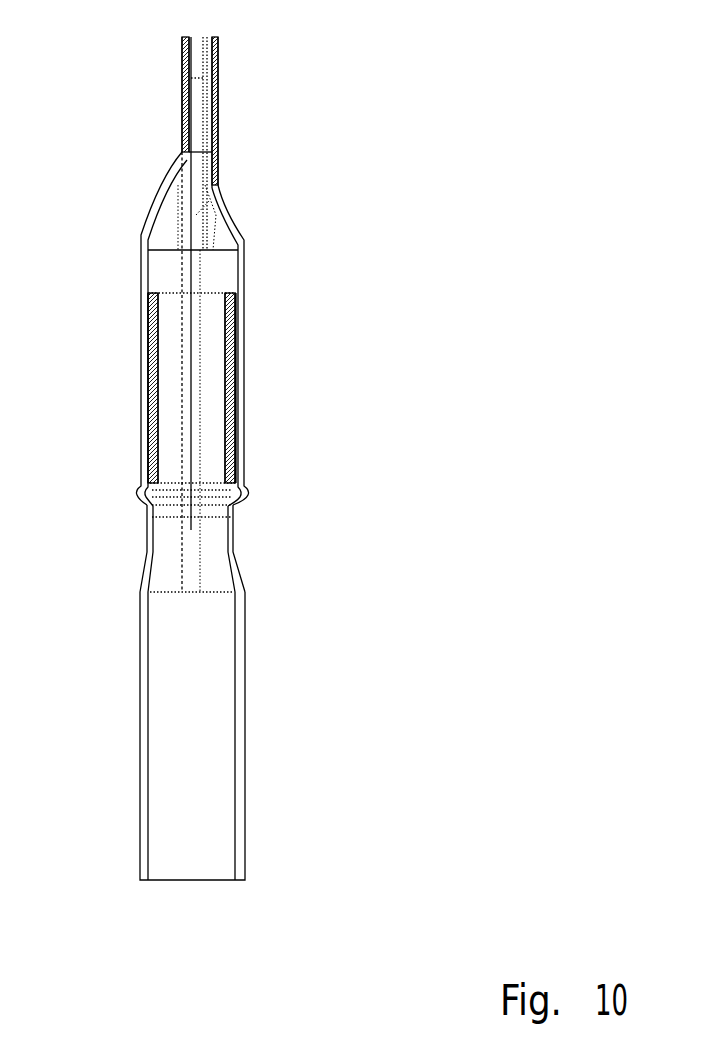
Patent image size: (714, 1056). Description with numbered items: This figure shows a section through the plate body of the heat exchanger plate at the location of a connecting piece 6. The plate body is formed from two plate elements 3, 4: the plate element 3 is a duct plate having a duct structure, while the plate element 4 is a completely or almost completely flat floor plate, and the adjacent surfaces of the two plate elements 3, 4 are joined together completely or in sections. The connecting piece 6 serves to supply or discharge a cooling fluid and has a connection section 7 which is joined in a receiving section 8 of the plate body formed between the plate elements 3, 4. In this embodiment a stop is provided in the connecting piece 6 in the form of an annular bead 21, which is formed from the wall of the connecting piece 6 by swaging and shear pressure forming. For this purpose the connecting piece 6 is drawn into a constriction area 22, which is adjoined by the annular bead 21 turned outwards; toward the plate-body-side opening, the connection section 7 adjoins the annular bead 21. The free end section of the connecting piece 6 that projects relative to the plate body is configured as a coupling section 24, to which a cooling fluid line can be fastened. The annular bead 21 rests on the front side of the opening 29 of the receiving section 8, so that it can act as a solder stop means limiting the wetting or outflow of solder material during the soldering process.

The plate element 3 is at (218, 97).
The plate element 4 is at (183, 70).
The connecting piece 6 is at (249, 689).
The connection section 7 is at (236, 340).
The receiving section 8 is at (245, 362).
The annular bead 21 is at (245, 495).
The constriction area 22 is at (145, 536).
The coupling section 24 is at (240, 762).
The opening 29 is at (243, 472).